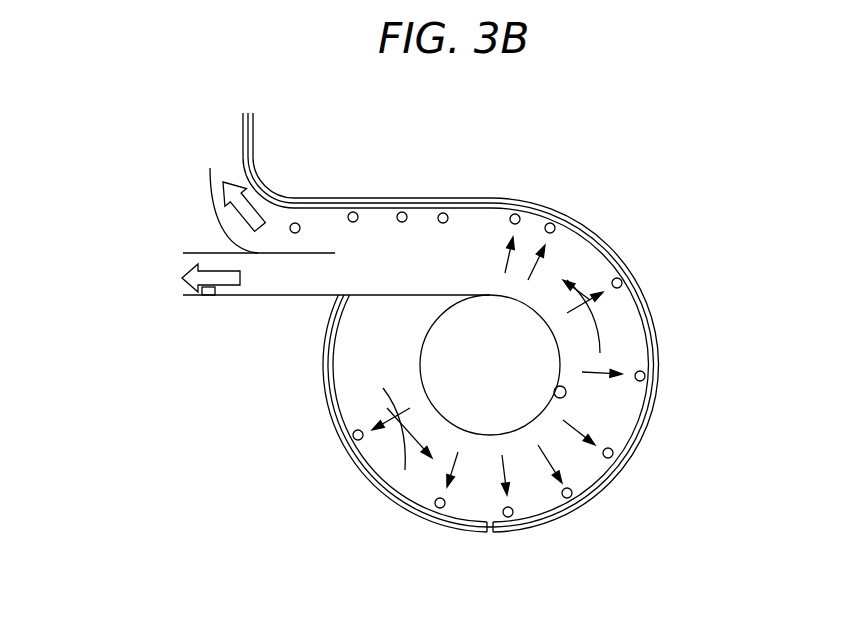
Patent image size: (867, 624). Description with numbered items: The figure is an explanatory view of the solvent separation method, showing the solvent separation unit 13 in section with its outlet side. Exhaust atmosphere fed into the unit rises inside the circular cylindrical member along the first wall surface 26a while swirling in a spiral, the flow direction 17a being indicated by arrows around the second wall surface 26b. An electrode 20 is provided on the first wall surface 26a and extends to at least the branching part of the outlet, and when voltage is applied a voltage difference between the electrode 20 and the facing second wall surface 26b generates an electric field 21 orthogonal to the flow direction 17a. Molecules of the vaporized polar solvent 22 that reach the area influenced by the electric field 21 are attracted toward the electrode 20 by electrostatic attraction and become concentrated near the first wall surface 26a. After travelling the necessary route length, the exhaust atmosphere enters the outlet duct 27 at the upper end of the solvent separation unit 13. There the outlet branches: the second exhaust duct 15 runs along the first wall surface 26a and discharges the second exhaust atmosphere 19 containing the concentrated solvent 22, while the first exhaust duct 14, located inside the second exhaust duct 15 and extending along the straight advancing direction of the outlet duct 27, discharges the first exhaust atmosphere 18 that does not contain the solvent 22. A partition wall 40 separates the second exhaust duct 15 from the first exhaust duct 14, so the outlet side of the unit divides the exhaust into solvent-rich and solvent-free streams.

The solvent separation unit 13 is at (624, 250).
The first exhaust duct 14 is at (258, 297).
The second exhaust duct 15 is at (209, 181).
The direction in which the exhaust atmosphere flows 17a is at (600, 340).
The first exhaust atmosphere 18 is at (215, 296).
The second exhaust atmosphere 19 is at (247, 200).
The electrode 20 is at (447, 198).
The electric field 21 is at (408, 408).
The solvent 22 is at (400, 212).
The first wall surface 26a is at (327, 404).
The second wall surface 26b is at (556, 391).
The outlet duct 27 is at (447, 258).
The partition wall 40 is at (308, 255).